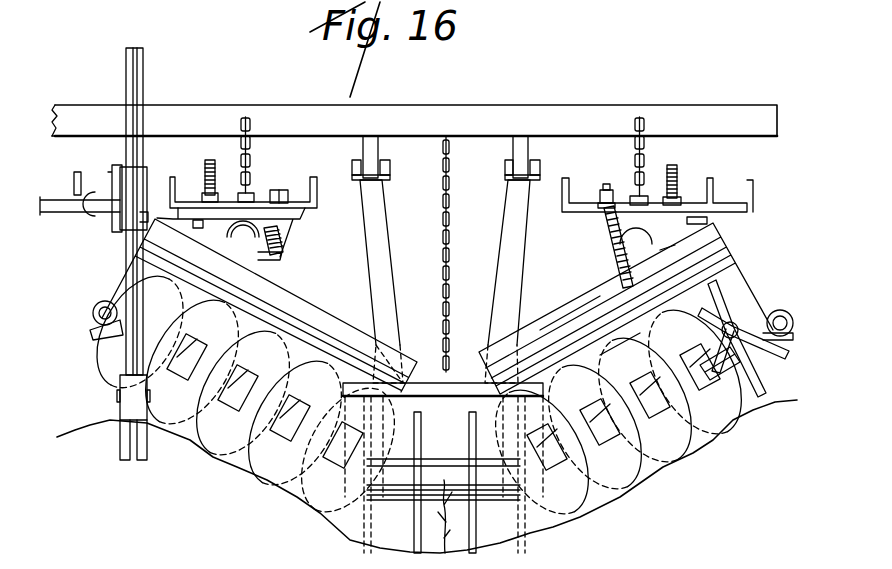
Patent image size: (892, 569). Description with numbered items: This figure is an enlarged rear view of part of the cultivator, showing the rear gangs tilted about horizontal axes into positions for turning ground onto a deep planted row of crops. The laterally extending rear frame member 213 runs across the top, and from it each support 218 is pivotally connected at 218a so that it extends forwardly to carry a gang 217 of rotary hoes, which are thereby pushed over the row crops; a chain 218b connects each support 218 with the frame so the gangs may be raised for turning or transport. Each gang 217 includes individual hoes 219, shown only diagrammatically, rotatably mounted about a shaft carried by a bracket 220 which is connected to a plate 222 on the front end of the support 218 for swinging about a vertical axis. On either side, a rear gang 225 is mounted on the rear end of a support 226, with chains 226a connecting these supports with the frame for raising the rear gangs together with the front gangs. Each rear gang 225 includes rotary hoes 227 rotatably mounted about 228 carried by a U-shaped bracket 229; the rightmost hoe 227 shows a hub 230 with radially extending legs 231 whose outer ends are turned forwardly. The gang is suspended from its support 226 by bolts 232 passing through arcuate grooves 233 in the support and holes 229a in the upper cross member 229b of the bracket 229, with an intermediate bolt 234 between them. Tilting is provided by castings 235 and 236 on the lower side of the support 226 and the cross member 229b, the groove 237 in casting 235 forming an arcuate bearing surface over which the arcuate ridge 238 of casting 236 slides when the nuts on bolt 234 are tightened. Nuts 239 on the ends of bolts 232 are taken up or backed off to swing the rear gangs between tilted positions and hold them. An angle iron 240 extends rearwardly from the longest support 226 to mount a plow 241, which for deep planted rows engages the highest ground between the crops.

The rear frame member 213 is at (580, 104).
The gang of rotary hoes 217 is at (345, 549).
The support 218 is at (380, 240).
The pivotal connection 218a is at (388, 182).
The chain 218b is at (470, 213).
The rotary hoe 219 is at (528, 549).
The bracket 220 is at (445, 400).
The plate 222 is at (455, 372).
The rear gang 225 is at (214, 472).
The support 226 is at (77, 172).
The chain 226a is at (247, 143).
The rotary hoe 227 is at (270, 482).
The rotary mounting 228 is at (790, 301).
The U-shaped bracket 229 is at (742, 281).
The hole 229a is at (623, 312).
The upper cross member 229b is at (583, 280).
The hub 230 is at (738, 333).
The leg 231 is at (730, 380).
The bolt 232 is at (283, 247).
The arcuate groove 233 is at (605, 220).
The intermediate bolt 234 is at (248, 188).
The casting 235 is at (670, 190).
The casting 236 is at (645, 244).
The groove 237 is at (643, 188).
The ridge 238 is at (262, 230).
The nut 239 is at (285, 194).
The angle iron 240 is at (100, 218).
The plow 241 is at (110, 408).